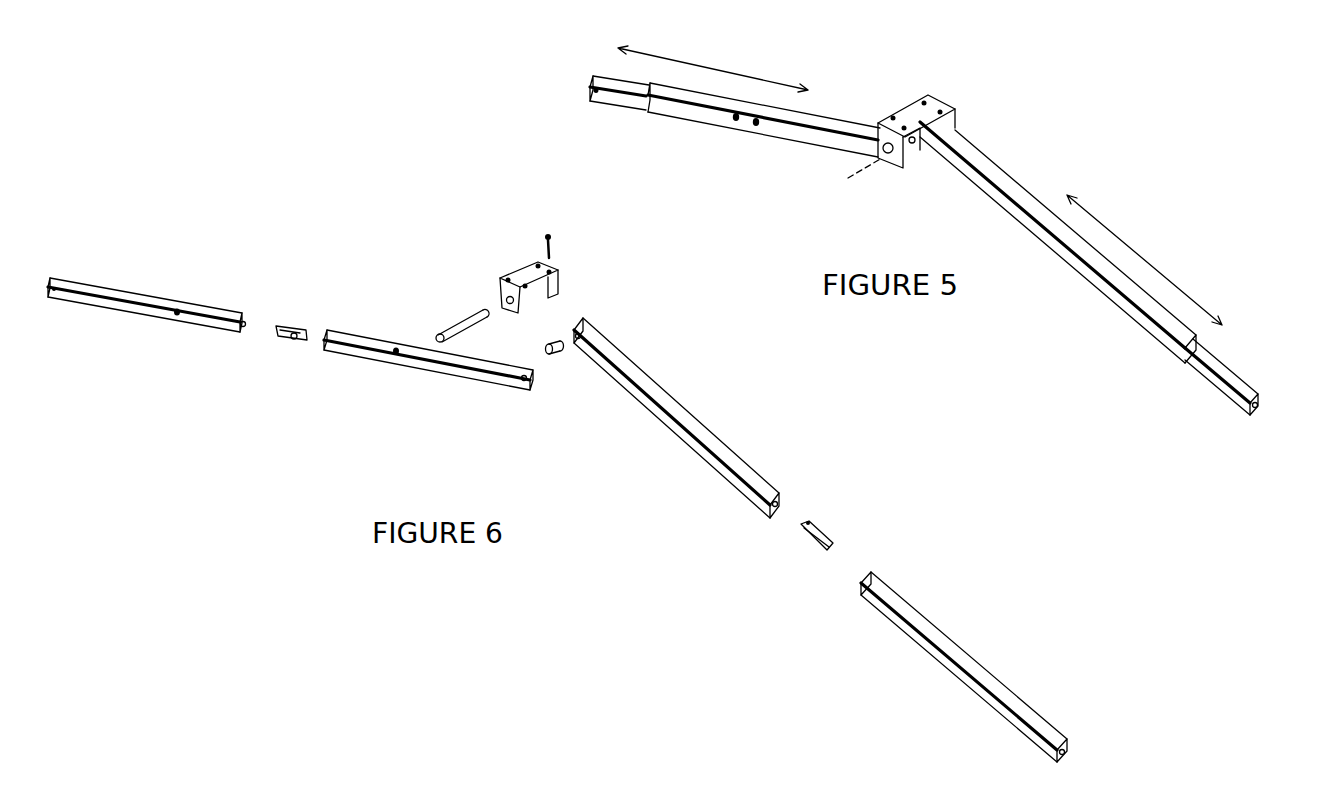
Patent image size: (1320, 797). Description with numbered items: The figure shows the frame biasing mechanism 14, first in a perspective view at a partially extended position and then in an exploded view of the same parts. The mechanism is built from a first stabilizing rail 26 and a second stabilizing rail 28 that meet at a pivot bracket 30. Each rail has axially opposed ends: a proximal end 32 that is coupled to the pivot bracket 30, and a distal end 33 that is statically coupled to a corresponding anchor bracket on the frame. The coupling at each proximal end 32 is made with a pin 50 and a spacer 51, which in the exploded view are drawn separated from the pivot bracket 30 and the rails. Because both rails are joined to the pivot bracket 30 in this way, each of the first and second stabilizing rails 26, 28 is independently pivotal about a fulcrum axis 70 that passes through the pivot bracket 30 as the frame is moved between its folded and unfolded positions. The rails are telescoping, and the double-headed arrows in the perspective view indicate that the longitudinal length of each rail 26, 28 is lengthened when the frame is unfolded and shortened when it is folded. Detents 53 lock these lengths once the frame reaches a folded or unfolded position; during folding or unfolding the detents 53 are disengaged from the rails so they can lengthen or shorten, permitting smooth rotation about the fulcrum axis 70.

In FIG. 5, the frame biasing mechanism 14 is at (870, 260).
In FIG. 6, the frame biasing mechanism 14 is at (557, 461).
In FIG. 5, the first stabilizing rail 26 is at (749, 150).
In FIG. 6, the first stabilizing rail 26 is at (290, 345).
In FIG. 5, the second stabilizing rail 28 is at (1071, 261).
In FIG. 6, the second stabilizing rail 28 is at (820, 540).
In FIG. 5, the pivot bracket 30 is at (913, 108).
In FIG. 6, the pivot bracket 30 is at (512, 257).
In FIG. 5, the proximal end 32 is at (903, 136).
In FIG. 5, the distal end 33 is at (870, 268).
In FIG. 6, the pin 50 is at (462, 299).
In FIG. 6, the spacer 51 is at (569, 386).
In FIG. 6, the detent 53 is at (586, 438).
In FIG. 5, the fulcrum axis 70 is at (877, 189).